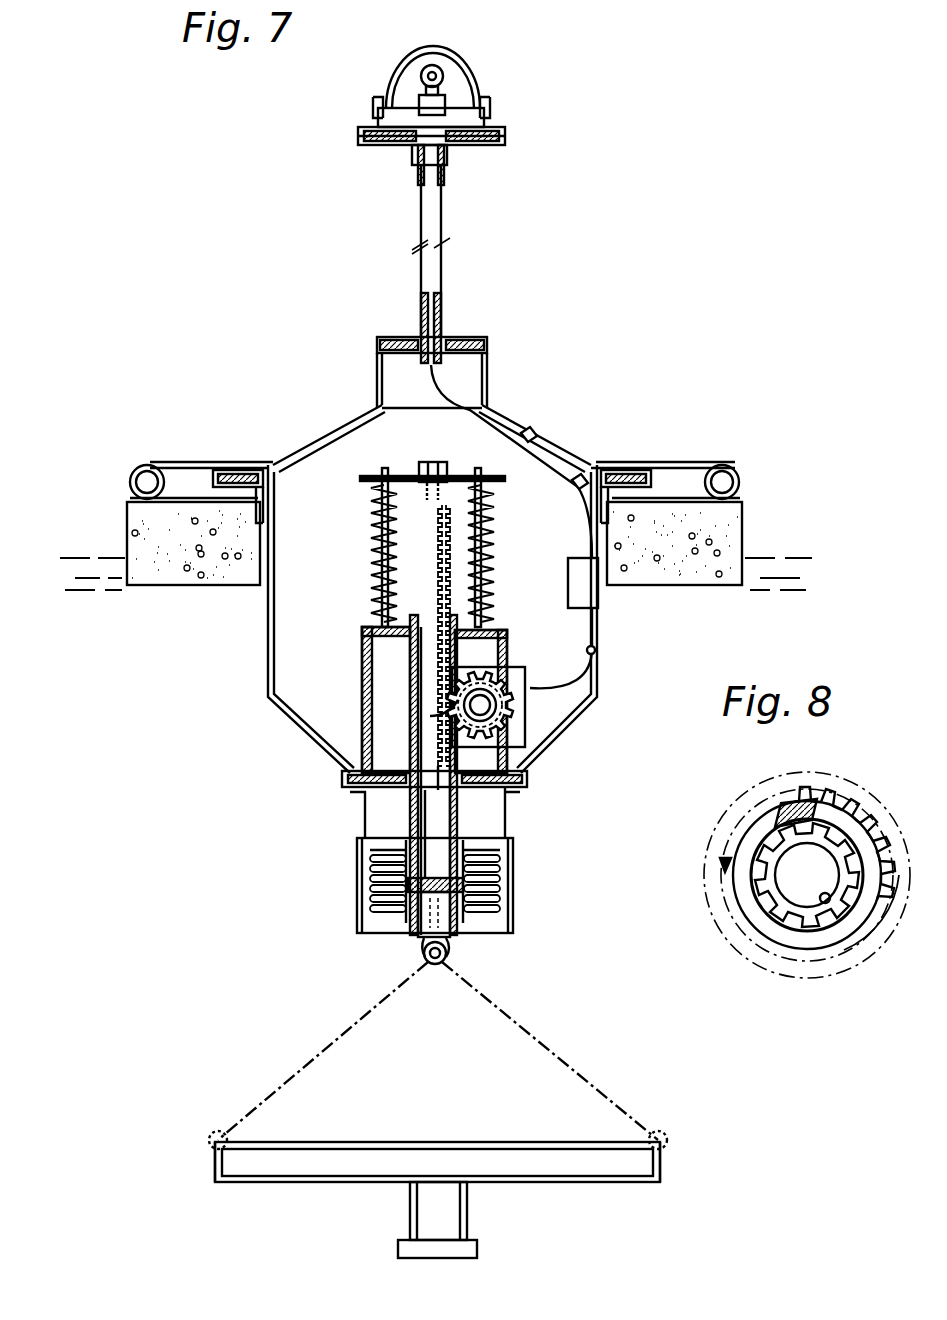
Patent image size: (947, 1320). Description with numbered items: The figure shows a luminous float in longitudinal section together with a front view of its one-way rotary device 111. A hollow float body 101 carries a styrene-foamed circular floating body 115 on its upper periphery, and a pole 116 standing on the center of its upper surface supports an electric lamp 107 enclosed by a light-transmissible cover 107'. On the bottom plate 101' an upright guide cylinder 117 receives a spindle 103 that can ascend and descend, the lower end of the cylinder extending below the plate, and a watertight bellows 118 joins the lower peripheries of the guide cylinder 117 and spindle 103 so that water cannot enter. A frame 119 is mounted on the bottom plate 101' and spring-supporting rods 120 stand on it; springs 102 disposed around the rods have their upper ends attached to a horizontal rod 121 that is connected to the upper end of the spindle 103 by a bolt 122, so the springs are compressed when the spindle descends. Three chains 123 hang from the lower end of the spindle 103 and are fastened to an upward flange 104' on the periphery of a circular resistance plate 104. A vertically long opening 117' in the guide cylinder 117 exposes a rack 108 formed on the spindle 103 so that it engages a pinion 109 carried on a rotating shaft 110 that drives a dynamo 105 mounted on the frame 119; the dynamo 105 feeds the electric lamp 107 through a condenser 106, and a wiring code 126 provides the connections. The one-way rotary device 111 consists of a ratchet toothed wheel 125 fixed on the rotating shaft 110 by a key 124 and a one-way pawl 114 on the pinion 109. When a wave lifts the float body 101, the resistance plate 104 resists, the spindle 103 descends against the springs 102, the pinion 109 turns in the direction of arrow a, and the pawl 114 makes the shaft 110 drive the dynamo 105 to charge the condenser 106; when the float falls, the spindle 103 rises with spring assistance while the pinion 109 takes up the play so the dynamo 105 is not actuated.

In FIG. 7, the hollow float body 101 is at (391, 619).
In FIG. 7, the bottom plate 101' is at (388, 811).
In FIG. 7, the springs 102 is at (483, 550).
In FIG. 7, the spindle 103 is at (427, 812).
In FIG. 7, the circular resistance plate 104 is at (438, 1194).
In FIG. 7, the upward flange 104' is at (480, 1172).
In FIG. 7, the dynamo 105 is at (500, 676).
In FIG. 7, the condenser 106 is at (568, 594).
In FIG. 7, the electric lamp 107 is at (472, 80).
In FIG. 7, the light-transmissible cover 107' is at (404, 88).
In FIG. 7, the rack 108 is at (436, 576).
In FIG. 7, the pinion 109 is at (492, 716).
In FIG. 8, the pinion 109 is at (827, 782).
In FIG. 7, the rotating shaft 110 is at (456, 718).
In FIG. 8, the rotating shaft 110 is at (788, 877).
In FIG. 7, the one-way rotary device 111 is at (522, 712).
In FIG. 8, the one-way rotary device 111 is at (797, 920).
In FIG. 8, the one-way pawl 114 is at (783, 808).
In FIG. 7, the circular floating body 115 is at (178, 585).
In FIG. 7, the pole 116 is at (443, 218).
In FIG. 7, the guide cylinder 117 is at (391, 775).
In FIG. 7, the long opening 117' is at (512, 772).
In FIG. 7, the watertight bellows 118 is at (370, 887).
In FIG. 7, the frame 119 is at (362, 660).
In FIG. 7, the spring-supporting rods 120 is at (485, 520).
In FIG. 7, the spring plate 121 is at (400, 476).
In FIG. 7, the bolt 122 is at (433, 462).
In FIG. 7, the chains 123 is at (473, 990).
In FIG. 8, the key 124 is at (827, 905).
In FIG. 8, the ratchet toothed wheel 125 is at (818, 917).
In FIG. 7, the wiring code 126 is at (450, 392).
In FIG. 7, the arrow a is at (430, 716).
In FIG. 8, the arrow a is at (726, 852).